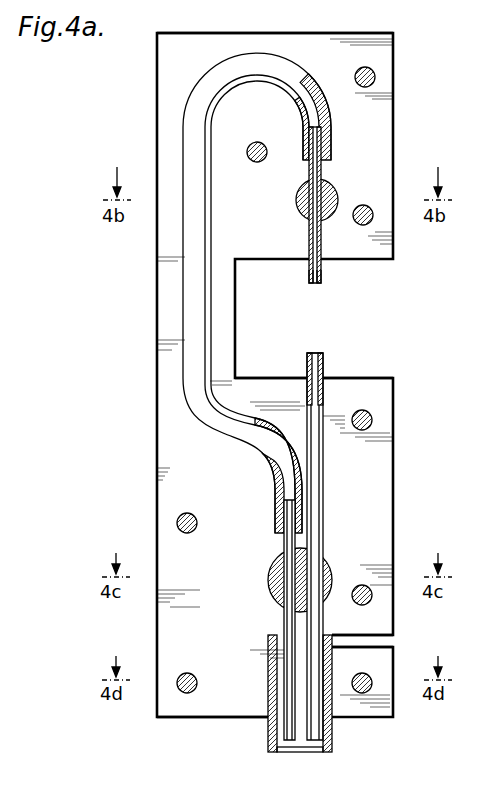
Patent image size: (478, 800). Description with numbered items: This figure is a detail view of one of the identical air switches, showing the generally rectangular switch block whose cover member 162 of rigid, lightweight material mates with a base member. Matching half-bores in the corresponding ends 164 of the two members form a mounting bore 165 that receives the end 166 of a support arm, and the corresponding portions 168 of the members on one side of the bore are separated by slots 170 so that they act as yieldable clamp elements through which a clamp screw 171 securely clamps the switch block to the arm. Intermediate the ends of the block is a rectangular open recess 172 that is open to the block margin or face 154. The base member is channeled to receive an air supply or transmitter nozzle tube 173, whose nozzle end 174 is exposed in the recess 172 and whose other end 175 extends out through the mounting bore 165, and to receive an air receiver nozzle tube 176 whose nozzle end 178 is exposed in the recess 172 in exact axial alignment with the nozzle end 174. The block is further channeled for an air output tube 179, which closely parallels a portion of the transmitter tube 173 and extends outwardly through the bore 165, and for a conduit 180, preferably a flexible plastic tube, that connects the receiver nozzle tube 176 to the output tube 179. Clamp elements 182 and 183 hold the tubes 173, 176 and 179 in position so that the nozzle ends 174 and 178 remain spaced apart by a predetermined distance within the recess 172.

The block margin or face 154 is at (393, 418).
The cover member 162 is at (279, 40).
The corresponding ends 164 is at (200, 702).
The mounting bore 165 is at (284, 673).
The end of support arm 166 is at (333, 738).
The corresponding portions 168 is at (388, 708).
The slots 170 is at (383, 640).
The clamp screw 171 is at (376, 664).
The rectangular open recess 172 is at (364, 377).
The air supply or transmitter nozzle tube 173 is at (318, 468).
The nozzle end 174 is at (323, 368).
The other end 175 is at (314, 733).
The air receiver nozzle tube 176 is at (323, 177).
The nozzle end 178 is at (326, 281).
The air output tube 179 is at (280, 610).
The conduit 180 is at (184, 283).
The clamp element 182 is at (333, 565).
The clamp element 183 is at (296, 198).